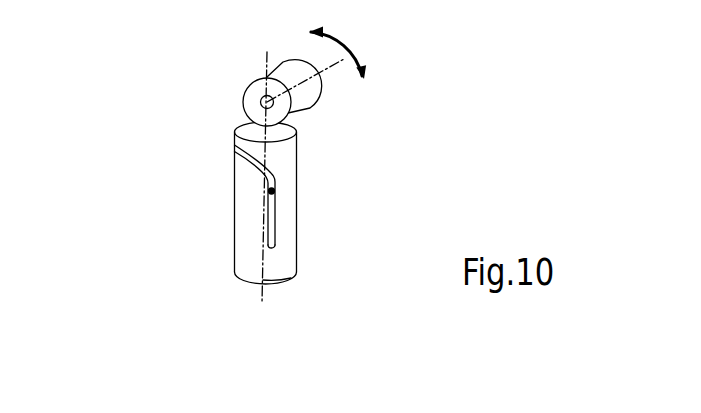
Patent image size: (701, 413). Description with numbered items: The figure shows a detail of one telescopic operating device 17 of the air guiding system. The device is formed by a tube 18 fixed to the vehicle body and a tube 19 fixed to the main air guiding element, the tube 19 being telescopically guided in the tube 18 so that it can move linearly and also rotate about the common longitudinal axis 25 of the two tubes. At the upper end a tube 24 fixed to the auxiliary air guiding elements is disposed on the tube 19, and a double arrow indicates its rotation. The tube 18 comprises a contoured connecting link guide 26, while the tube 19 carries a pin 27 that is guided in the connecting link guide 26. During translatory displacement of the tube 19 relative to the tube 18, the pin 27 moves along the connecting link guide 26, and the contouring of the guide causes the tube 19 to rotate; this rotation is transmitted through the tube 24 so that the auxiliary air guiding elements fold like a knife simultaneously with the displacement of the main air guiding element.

The telescopic operating device 17 is at (258, 312).
The tube fixed to the vehicle body 18 is at (273, 250).
The tube fixed to the main air guiding element 19 is at (240, 116).
The tube fixed to the auxiliary air guiding elements 24 is at (306, 95).
The longitudinal axis 25 is at (290, 284).
The connecting link guide 26 is at (255, 235).
The pin 27 is at (277, 192).